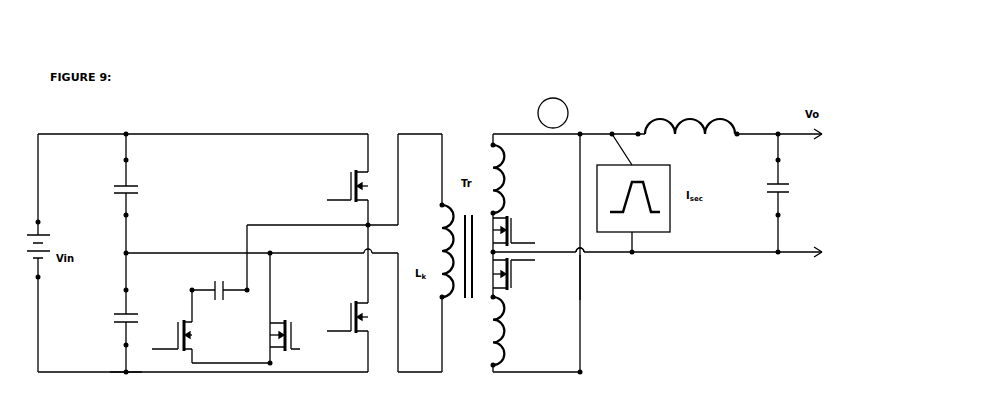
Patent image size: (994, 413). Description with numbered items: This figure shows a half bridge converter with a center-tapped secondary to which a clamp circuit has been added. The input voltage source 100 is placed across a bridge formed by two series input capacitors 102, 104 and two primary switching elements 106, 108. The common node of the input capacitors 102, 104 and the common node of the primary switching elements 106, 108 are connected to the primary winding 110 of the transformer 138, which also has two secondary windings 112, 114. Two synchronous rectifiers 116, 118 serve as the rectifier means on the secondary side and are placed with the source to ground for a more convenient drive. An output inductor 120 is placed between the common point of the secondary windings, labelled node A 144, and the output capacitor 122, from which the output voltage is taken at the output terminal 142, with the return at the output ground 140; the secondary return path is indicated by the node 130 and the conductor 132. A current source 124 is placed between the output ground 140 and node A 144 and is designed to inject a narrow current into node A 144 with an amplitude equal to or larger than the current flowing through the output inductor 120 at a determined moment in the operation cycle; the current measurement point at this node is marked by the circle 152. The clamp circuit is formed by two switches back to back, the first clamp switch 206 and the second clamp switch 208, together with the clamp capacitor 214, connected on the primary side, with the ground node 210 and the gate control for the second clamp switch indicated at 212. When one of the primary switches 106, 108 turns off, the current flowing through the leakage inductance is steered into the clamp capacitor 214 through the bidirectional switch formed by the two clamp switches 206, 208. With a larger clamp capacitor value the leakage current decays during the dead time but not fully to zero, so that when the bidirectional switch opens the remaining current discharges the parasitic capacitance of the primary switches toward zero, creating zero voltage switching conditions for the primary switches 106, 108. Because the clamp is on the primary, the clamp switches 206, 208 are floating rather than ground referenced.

The input voltage source 100 is at (47, 230).
The input capacitor 102 is at (116, 188).
The input capacitor 104 is at (116, 318).
The primary switching element 106 is at (340, 188).
The primary switching element 108 is at (341, 320).
The primary winding 110 is at (440, 258).
The secondary winding 112 is at (508, 170).
The secondary winding 114 is at (508, 323).
The synchronous rectifier 116 is at (536, 243).
The synchronous rectifier 118 is at (532, 275).
The output inductor 120 is at (678, 121).
The output capacitor 122 is at (767, 185).
The current source 124 is at (672, 217).
The secondary center-tap node 130 is at (582, 254).
The secondary return conductor 132 is at (581, 270).
The transformer 138 is at (467, 170).
The output ground 140 is at (782, 254).
The output terminal Vo 142 is at (782, 136).
The node A 144 is at (581, 133).
The current measurement point A 152 is at (563, 102).
The switch Q5 206 is at (198, 330).
The auxiliary switch Q3 208 is at (270, 332).
The ground node 210 is at (128, 374).
The gate control Vcg3 212 is at (327, 352).
The clamp capacitor 214 is at (214, 280).